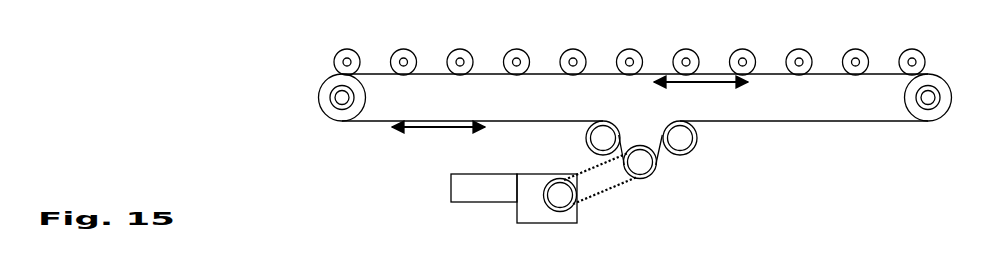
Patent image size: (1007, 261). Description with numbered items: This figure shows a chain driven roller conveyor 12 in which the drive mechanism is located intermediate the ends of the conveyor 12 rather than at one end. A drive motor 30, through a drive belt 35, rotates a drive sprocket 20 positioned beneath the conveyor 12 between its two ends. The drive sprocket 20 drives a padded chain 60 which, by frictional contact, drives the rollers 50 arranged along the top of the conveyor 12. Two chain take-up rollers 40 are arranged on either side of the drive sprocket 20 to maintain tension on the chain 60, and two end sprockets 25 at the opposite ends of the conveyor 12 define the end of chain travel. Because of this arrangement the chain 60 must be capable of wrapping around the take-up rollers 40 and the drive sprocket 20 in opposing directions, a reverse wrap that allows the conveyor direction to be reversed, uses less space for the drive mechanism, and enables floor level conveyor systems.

The conveyor 12 is at (371, 21).
The drive sprocket 20 is at (653, 167).
The end sprocket 25 is at (322, 88).
The drive motor 30 is at (538, 217).
The drive belt 35 is at (602, 193).
The chain take-up rollers 40 is at (587, 140).
The support roller 50 is at (680, 50).
The padded chain 60 is at (772, 122).